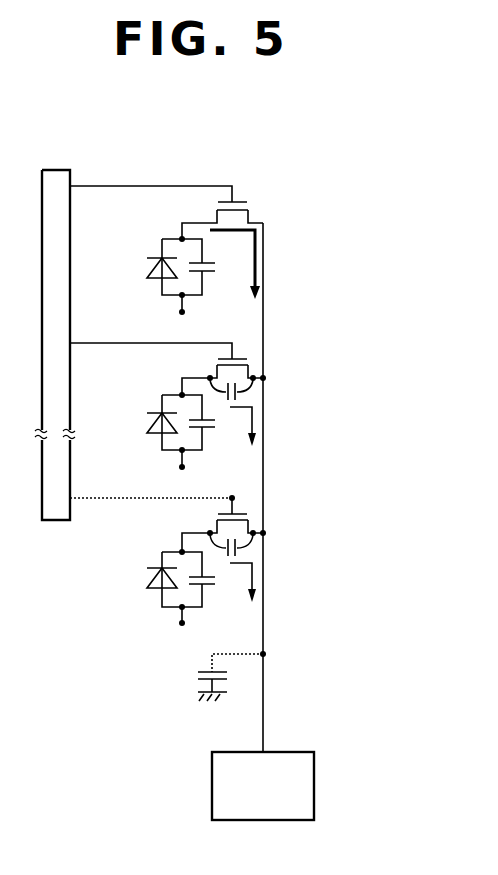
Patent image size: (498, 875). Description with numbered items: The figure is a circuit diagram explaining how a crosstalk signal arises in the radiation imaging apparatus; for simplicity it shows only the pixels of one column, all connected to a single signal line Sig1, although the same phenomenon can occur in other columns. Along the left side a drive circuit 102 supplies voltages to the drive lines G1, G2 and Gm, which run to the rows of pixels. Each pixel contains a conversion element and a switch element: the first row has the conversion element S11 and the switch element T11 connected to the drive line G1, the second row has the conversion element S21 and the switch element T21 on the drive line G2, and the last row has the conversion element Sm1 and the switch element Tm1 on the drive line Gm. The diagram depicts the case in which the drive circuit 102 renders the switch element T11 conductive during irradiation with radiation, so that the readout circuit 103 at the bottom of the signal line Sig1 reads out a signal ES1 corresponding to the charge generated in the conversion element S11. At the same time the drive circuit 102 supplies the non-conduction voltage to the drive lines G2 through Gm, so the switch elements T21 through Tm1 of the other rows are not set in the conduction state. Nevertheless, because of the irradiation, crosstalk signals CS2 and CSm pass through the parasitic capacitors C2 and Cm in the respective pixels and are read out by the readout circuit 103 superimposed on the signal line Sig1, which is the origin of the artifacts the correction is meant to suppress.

The drive circuit 102 is at (59, 168).
The readout circuit 103 is at (314, 782).
The drive line G1 is at (151, 181).
The drive line G2 is at (151, 339).
The drive line Gm is at (152, 493).
The switch element T11 is at (252, 213).
The signal ES1 is at (259, 267).
The conversion element S11 is at (176, 264).
The switch element T21 is at (252, 367).
The conversion element S21 is at (176, 419).
The parasitic capacitor C2 is at (240, 398).
The crosstalk signal CS2 is at (258, 428).
The switch element Tm1 is at (252, 523).
The conversion element Sm1 is at (175, 574).
The parasitic capacitor Cm is at (240, 553).
The crosstalk signal CSm is at (258, 585).
The signal line Sig1 is at (289, 487).